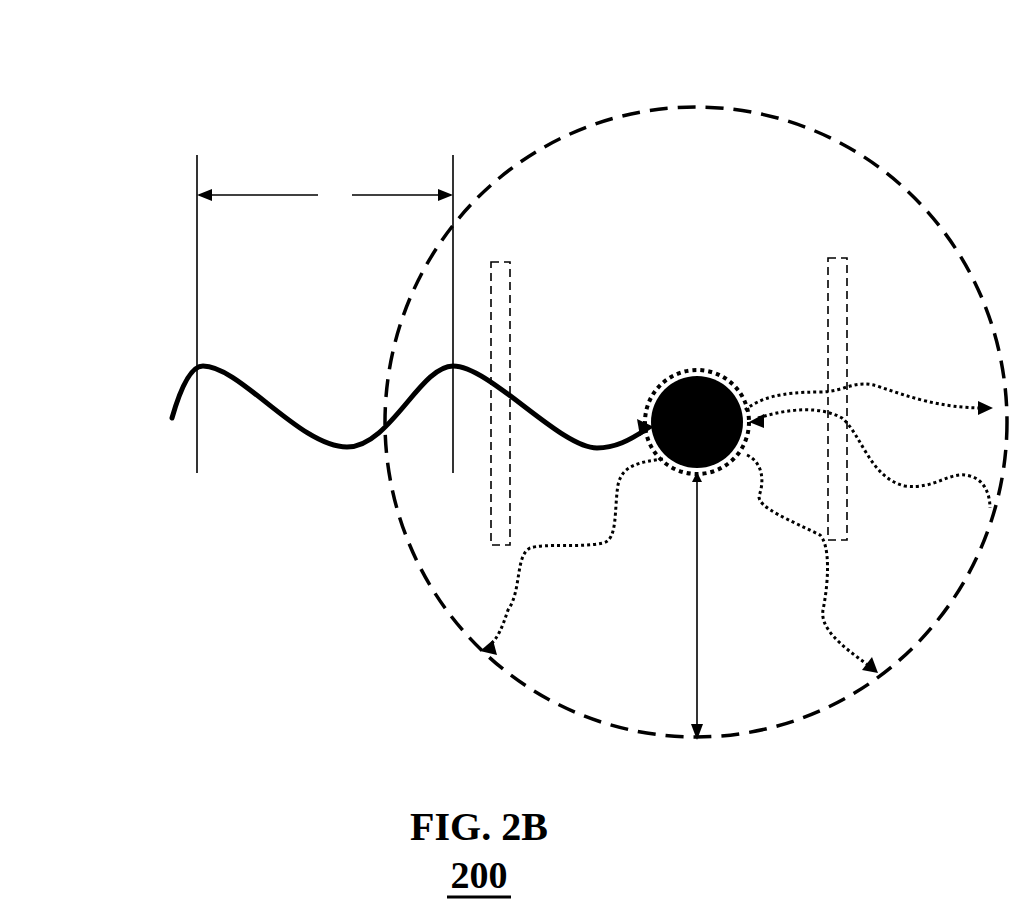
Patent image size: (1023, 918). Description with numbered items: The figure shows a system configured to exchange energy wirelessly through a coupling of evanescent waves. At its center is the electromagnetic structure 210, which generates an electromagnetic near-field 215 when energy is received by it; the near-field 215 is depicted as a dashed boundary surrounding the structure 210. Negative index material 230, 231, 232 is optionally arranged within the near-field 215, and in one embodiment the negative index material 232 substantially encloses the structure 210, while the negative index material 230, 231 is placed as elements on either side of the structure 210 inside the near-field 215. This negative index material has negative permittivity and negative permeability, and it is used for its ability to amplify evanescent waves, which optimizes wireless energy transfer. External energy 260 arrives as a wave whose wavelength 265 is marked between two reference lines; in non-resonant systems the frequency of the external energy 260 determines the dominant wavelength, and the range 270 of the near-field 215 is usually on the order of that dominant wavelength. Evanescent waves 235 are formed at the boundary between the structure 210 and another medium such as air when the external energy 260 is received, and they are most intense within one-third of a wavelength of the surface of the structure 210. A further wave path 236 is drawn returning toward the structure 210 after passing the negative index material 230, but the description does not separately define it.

The structure 210 is at (670, 375).
The electromagnetic near-field 215 is at (537, 148).
The negative index material 230 is at (848, 275).
The negative index material 231 is at (511, 288).
The negative index material 232 is at (703, 370).
The evanescent waves 235 is at (898, 393).
The back-scattered light path 236 is at (900, 484).
The external energy 260 is at (373, 432).
The wavelength 265 is at (337, 157).
The range of the near-field 270 is at (697, 605).